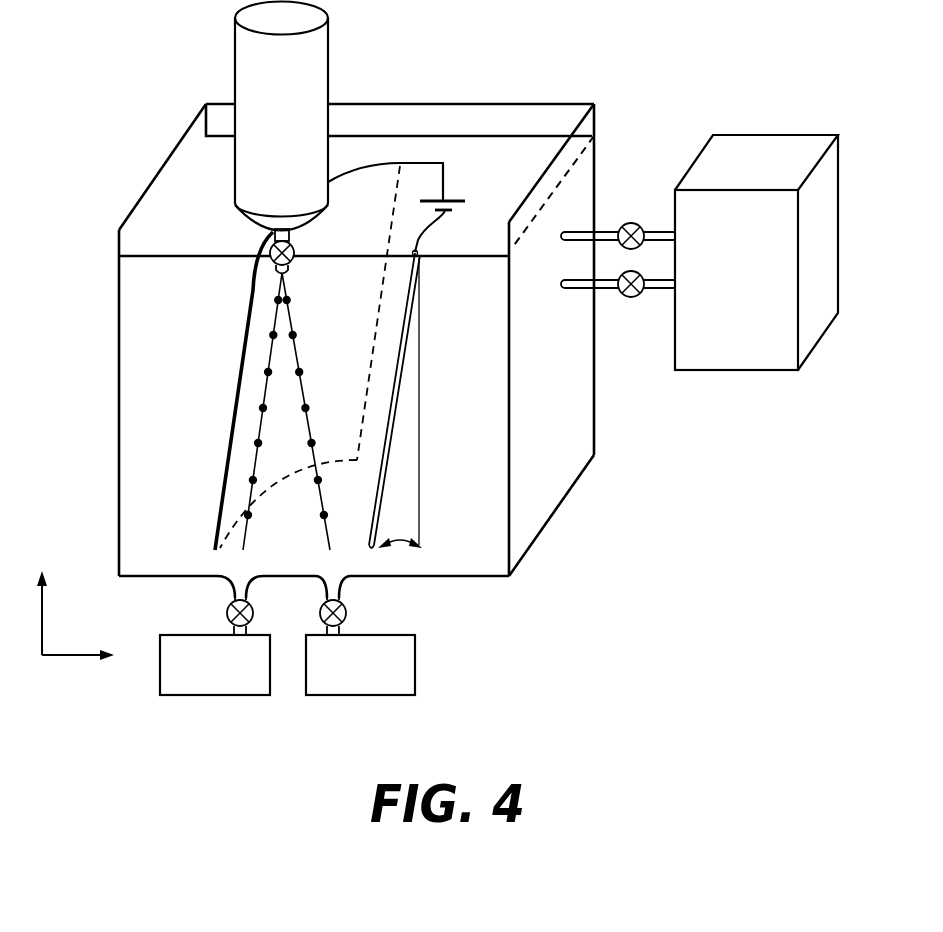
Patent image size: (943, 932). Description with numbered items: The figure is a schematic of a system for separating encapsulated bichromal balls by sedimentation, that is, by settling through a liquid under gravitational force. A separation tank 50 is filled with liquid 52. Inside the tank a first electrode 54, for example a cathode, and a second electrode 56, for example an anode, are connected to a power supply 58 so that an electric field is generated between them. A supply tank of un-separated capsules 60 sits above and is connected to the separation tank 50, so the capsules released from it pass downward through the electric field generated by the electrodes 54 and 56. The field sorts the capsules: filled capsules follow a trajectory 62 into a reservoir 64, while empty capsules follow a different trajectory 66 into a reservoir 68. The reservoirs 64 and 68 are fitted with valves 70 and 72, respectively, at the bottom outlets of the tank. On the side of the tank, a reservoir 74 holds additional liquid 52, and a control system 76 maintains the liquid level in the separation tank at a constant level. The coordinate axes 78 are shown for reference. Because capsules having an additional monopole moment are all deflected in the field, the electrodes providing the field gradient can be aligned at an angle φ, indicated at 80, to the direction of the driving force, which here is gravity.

The separation tank 50 is at (553, 105).
The liquid 52 is at (521, 175).
The first electrode 54 is at (243, 339).
The second electrode 56 is at (408, 332).
The power supply 58 is at (447, 212).
The supply tank of un-separated capsules 60 is at (329, 78).
The trajectory 62 is at (330, 537).
The reservoir 64 is at (377, 684).
The trajectory 66 is at (240, 538).
The reservoir 68 is at (232, 684).
The valve 70 is at (346, 612).
The valve 72 is at (226, 612).
The reservoir 74 is at (758, 298).
The control system 76 is at (636, 270).
The coordinate axis 78 is at (68, 657).
The angle φ 80 is at (400, 546).